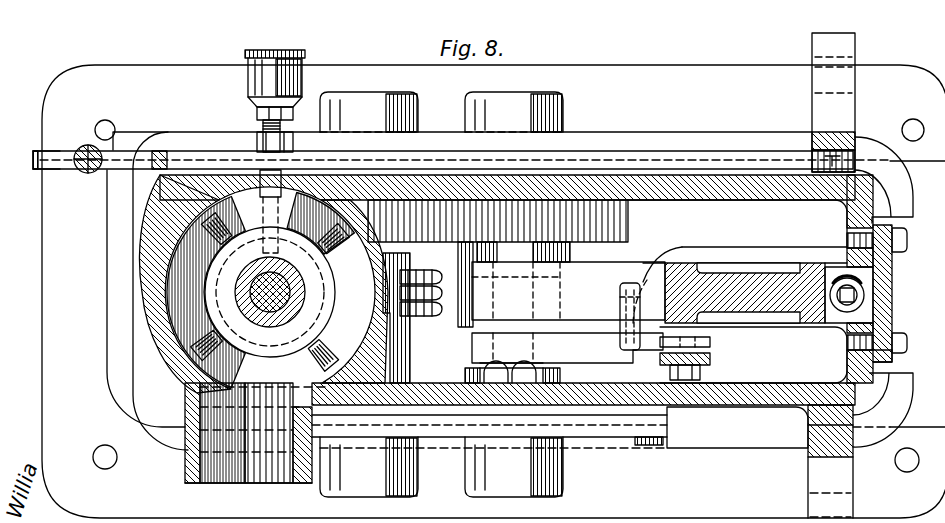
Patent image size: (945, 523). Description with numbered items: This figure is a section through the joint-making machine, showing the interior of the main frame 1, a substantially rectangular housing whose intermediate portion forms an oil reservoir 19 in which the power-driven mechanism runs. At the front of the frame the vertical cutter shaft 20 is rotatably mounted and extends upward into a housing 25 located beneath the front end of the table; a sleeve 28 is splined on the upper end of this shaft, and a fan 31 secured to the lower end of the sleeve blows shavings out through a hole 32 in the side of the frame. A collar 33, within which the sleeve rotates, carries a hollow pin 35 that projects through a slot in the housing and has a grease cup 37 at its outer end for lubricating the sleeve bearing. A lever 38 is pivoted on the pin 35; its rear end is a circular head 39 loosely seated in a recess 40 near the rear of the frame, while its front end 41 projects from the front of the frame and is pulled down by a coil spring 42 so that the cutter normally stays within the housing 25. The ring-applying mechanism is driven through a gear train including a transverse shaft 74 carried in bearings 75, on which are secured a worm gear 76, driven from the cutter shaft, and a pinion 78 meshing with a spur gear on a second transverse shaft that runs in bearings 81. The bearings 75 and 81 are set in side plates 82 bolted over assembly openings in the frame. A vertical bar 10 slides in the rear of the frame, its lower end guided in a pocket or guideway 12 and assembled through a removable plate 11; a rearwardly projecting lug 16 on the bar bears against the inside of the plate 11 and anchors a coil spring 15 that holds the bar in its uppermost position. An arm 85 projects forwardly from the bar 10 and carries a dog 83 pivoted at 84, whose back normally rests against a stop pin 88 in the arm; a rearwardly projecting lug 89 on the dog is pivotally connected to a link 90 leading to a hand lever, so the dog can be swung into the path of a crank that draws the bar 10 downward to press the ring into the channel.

The main frame 1 is at (153, 223).
The vertical bar 10 is at (772, 268).
The removable plate 11 is at (895, 262).
The pocket or guideway 12 is at (708, 253).
The coil spring 15 is at (893, 276).
The rearwardly projecting lug 16 is at (866, 315).
The oil reservoir 19 is at (737, 291).
The vertical cutter shaft 20 is at (300, 284).
The housing 25 is at (163, 297).
The sleeve 28 is at (305, 290).
The fan 31 is at (322, 336).
The hole 32 is at (258, 476).
The collar 33 is at (247, 352).
The pin 35 is at (281, 204).
The grease cup 37 is at (303, 54).
The lever 38 is at (700, 151).
The circular head 39 is at (855, 160).
The recess 40 is at (835, 150).
The front end of lever 41 is at (33, 166).
The coil spring 42 is at (84, 148).
The transverse shaft 74 is at (400, 367).
The bearings 75 is at (418, 98).
The worm gear 76 is at (440, 308).
The pinion 78 is at (402, 242).
The bearings 81 is at (565, 108).
The side plates 82 is at (618, 428).
The dog 83 is at (585, 360).
The pivot 84 is at (485, 370).
The arm 85 is at (585, 277).
The stop pin 88 is at (625, 352).
The rearwardly projecting lug 89 is at (708, 343).
The link 90 is at (705, 362).